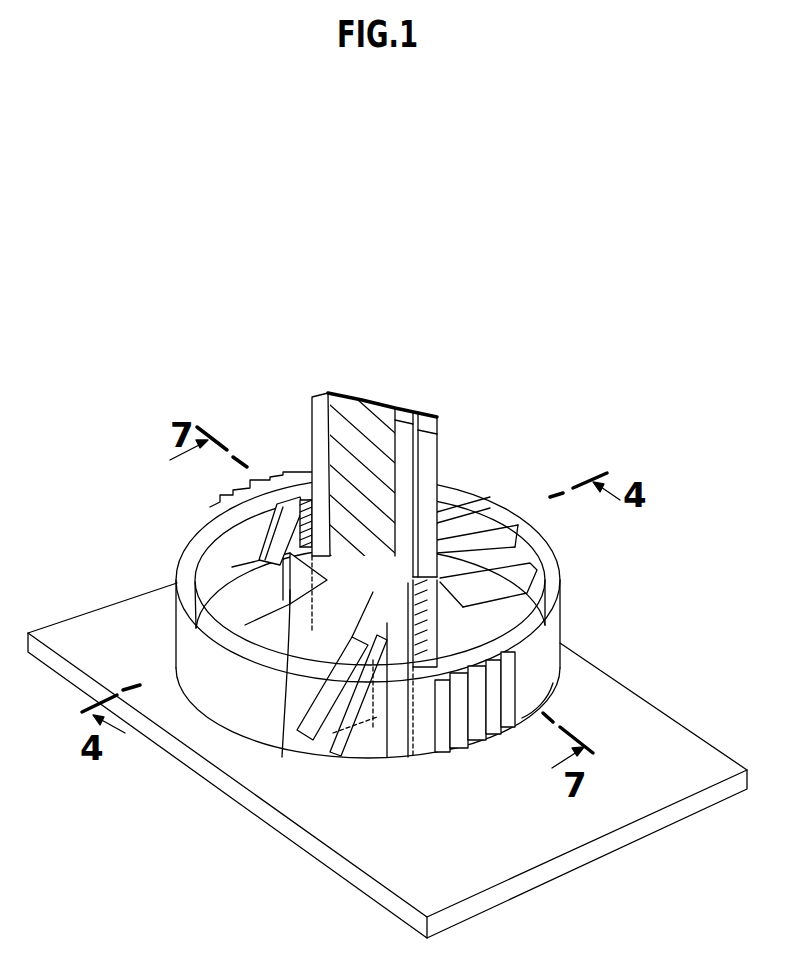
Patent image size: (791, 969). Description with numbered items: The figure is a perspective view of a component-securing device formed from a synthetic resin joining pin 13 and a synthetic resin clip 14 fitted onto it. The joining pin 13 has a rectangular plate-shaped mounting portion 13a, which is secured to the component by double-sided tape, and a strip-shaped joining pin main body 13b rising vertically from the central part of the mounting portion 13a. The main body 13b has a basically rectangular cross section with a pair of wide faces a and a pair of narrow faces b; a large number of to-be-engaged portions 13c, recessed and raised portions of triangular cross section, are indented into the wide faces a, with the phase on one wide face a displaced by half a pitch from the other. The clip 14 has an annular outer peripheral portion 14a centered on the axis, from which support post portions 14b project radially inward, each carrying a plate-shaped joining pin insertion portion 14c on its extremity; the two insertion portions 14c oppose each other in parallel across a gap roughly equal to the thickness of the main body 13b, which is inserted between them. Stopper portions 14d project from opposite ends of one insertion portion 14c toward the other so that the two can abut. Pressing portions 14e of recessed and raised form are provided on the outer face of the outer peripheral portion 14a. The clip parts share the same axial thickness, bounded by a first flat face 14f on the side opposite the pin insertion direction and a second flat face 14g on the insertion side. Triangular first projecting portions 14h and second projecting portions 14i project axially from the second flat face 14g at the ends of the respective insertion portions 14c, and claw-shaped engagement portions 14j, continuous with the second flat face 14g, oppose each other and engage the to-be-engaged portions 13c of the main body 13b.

The joining pin 13 is at (391, 475).
The mounting portion 13a is at (673, 733).
The joining pin main body 13b is at (306, 411).
The to-be-engaged portions 13c is at (352, 465).
The clip 14 is at (369, 619).
The outer peripheral portion 14a is at (233, 690).
The support post portions 14b is at (253, 617).
The joining pin insertion portion 14c is at (282, 757).
The stopper portions 14d is at (402, 745).
The pressing portions 14e is at (235, 490).
The first flat face 14f is at (553, 684).
The second flat face 14g is at (555, 566).
The first projecting portions 14h is at (293, 490).
The second projecting portions 14i is at (265, 530).
The engagement portions 14j is at (347, 700).
The wide faces a is at (316, 392).
The narrow faces b is at (425, 433).